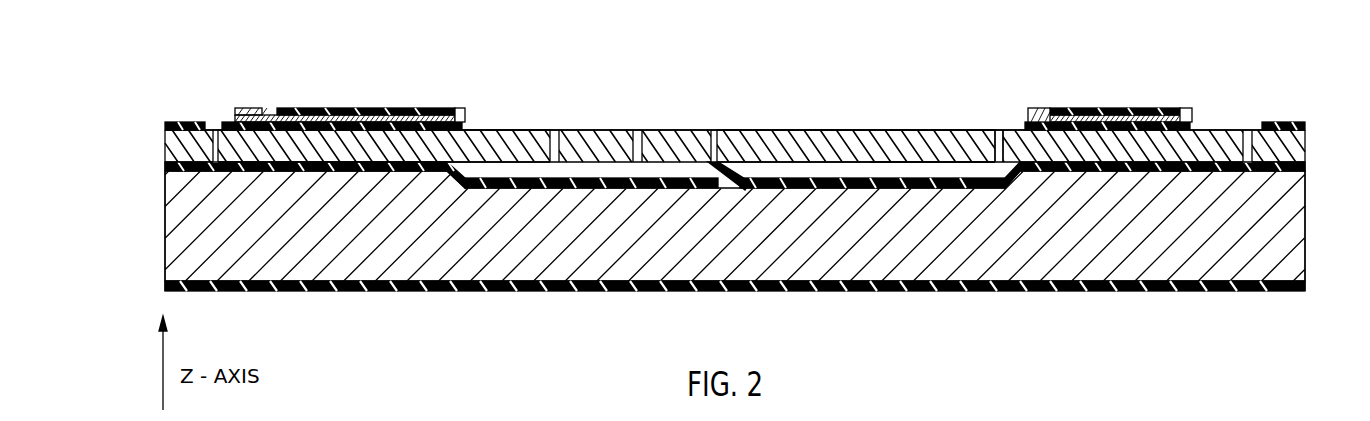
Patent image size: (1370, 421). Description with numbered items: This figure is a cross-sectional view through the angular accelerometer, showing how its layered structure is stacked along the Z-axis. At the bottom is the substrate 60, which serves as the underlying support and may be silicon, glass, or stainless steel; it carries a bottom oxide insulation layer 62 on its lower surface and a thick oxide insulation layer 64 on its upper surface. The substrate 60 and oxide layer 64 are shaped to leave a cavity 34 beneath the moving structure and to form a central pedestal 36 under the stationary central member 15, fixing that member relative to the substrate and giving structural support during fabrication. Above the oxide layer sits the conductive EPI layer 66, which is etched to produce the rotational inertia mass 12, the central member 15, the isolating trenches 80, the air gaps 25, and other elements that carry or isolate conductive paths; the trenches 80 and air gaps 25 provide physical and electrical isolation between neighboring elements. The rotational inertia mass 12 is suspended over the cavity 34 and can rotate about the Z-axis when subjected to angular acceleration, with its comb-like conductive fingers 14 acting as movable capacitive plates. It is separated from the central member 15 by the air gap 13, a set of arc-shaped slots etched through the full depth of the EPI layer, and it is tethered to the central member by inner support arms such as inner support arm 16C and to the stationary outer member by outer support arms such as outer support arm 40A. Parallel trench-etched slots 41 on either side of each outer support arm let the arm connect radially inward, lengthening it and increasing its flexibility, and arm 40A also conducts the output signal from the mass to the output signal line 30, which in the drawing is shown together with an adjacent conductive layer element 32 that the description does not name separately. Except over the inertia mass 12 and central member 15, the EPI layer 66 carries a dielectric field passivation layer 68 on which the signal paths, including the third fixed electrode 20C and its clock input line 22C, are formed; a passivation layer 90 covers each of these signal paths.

The rotational inertia mass 12 is at (688, 131).
The air gap 13 is at (712, 130).
The comb-like conductive fingers 14 is at (915, 150).
The stationary central member 15 is at (730, 140).
The inner support arm 16C is at (822, 140).
The third fixed electrode 20C is at (1052, 108).
The input line 22C is at (1172, 112).
The air gaps 25 is at (994, 135).
The output signal line 30 is at (303, 108).
The contact 32 is at (282, 107).
The cavity 34 is at (892, 170).
The central pedestal 36 is at (742, 168).
The outer support arm 40A is at (490, 130).
The trench-etched slots 41 is at (637, 130).
The substrate 60 is at (1282, 265).
The bottom oxide insulation layer 62 is at (1205, 293).
The thick oxide insulation layer 64 is at (1300, 170).
The EPI layer 66 is at (1302, 147).
The field passivation layer 68 is at (1288, 122).
The isolating trenches 80 is at (213, 128).
The passivation layer 90 is at (1083, 110).